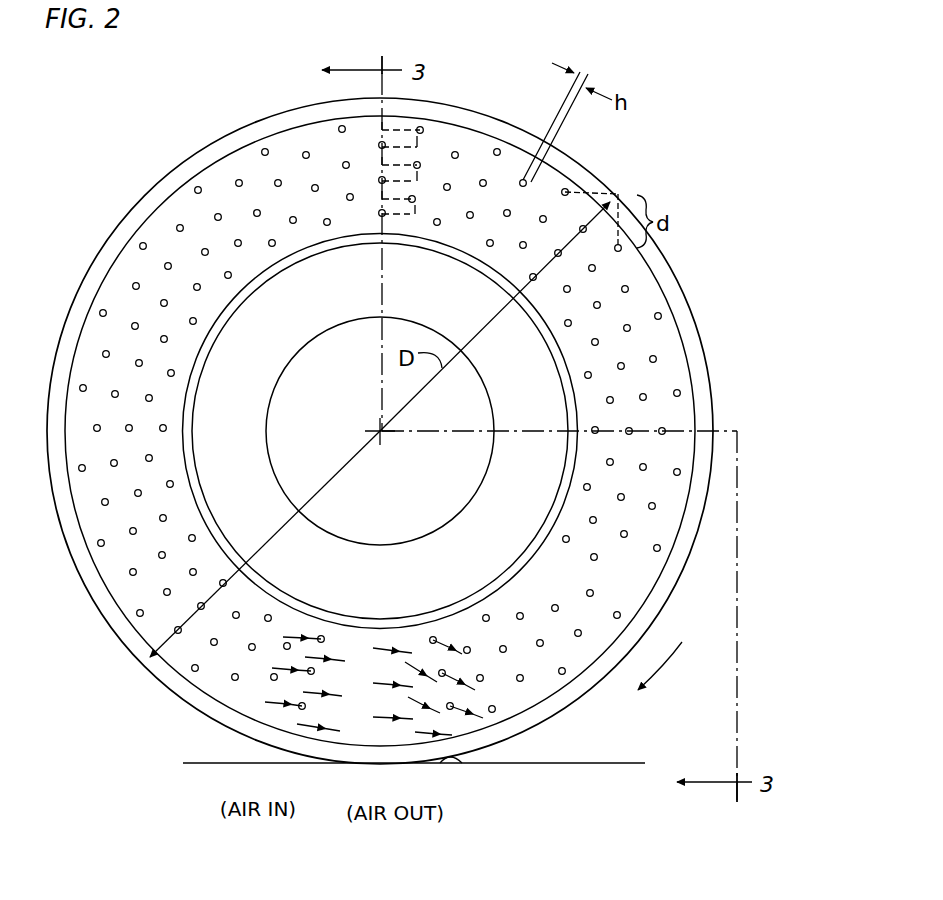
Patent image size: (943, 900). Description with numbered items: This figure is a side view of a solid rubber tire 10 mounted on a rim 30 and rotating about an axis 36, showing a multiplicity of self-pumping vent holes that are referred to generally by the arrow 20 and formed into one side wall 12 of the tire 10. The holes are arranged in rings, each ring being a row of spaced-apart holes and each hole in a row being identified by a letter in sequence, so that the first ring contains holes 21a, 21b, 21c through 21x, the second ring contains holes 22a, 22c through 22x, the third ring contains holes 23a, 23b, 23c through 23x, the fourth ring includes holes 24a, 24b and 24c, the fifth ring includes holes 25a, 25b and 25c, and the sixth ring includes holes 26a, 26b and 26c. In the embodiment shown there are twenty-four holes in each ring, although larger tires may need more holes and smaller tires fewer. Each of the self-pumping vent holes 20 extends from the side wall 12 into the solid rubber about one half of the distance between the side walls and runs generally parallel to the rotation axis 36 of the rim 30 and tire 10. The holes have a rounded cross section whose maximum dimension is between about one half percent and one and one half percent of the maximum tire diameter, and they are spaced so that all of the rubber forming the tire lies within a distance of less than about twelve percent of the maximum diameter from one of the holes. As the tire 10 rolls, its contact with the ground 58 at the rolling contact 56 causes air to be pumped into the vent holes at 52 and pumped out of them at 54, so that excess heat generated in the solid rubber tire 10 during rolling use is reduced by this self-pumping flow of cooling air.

The solid rubber tire 10 is at (162, 86).
The side wall 12 is at (548, 175).
The self-pumping vent holes 20 is at (442, 136).
The self pumping vent hole 21a is at (272, 243).
The self pumping vent hole 21b is at (327, 222).
The self pumping vent hole 21c is at (382, 213).
The self pumping vent hole 21x is at (228, 275).
The self pumping vent hole 22a is at (293, 220).
The self pumping vent hole 22c is at (412, 199).
The self pumping vent hole 22x is at (238, 243).
The self pumping vent hole 23a is at (257, 213).
The self pumping vent hole 23b is at (315, 188).
The self pumping vent hole 23c is at (382, 180).
The self pumping vent hole 23x is at (205, 252).
The self pumping vent hole 24a is at (278, 183).
The self pumping vent hole 24b is at (346, 165).
The self pumping vent hole 24c is at (417, 165).
The self pumping vent hole 25a is at (239, 183).
The self pumping vent hole 25b is at (265, 152).
The self pumping vent hole 25c is at (382, 145).
The self pumping vent hole 26a is at (306, 155).
The self pumping vent hole 26b is at (342, 129).
The self pumping vent hole 26c is at (422, 130).
The rim 30 is at (192, 463).
The axis of rotation 36 is at (378, 423).
The air pumping in 52 is at (303, 725).
The air pumping out 54 is at (415, 733).
The rolling contact 56 is at (448, 763).
The ground 58 is at (622, 763).